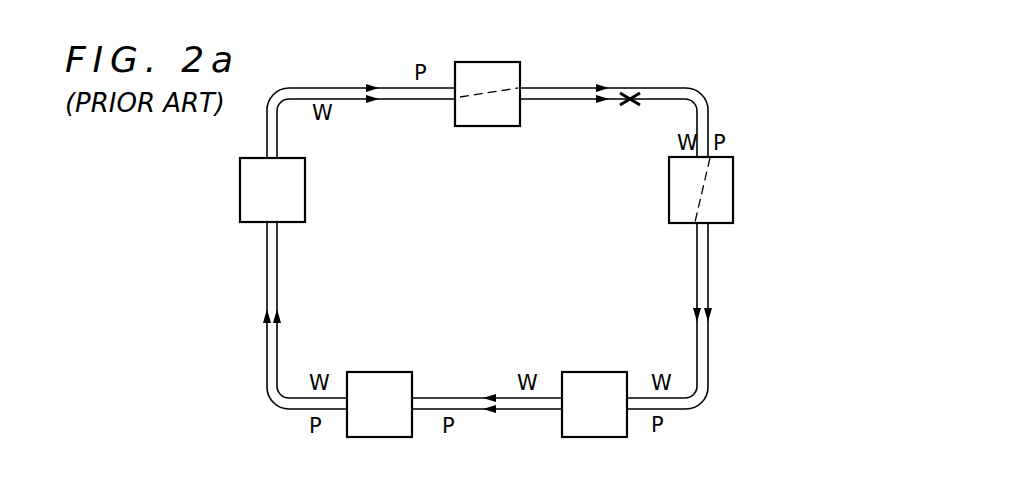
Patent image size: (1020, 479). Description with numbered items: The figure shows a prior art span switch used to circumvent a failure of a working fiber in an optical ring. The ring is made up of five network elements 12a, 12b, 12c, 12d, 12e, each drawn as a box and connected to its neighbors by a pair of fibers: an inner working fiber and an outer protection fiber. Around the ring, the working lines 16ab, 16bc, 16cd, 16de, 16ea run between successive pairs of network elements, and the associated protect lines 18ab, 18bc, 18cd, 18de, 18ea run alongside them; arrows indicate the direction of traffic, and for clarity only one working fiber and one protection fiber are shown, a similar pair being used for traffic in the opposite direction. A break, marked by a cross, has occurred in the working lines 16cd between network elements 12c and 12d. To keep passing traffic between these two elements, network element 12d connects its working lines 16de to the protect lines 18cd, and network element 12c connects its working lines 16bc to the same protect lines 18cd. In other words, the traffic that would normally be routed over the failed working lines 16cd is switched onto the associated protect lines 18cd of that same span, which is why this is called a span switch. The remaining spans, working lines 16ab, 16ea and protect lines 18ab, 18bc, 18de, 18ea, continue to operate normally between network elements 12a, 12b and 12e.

The network element 12a is at (378, 371).
The network element 12b is at (595, 371).
The network element 12c is at (734, 190).
The network element 12d is at (487, 61).
The network element 12e is at (240, 190).
The working lines 16ab is at (448, 396).
The working lines 16bc is at (696, 266).
The working lines 16cd is at (557, 101).
The working lines 16de is at (417, 101).
The working lines 16ea is at (279, 266).
The protect lines 18ab is at (525, 411).
The protect lines 18bc is at (709, 266).
The protect lines 18cd is at (664, 86).
The protect lines 18de is at (328, 86).
The protect lines 18ea is at (266, 266).